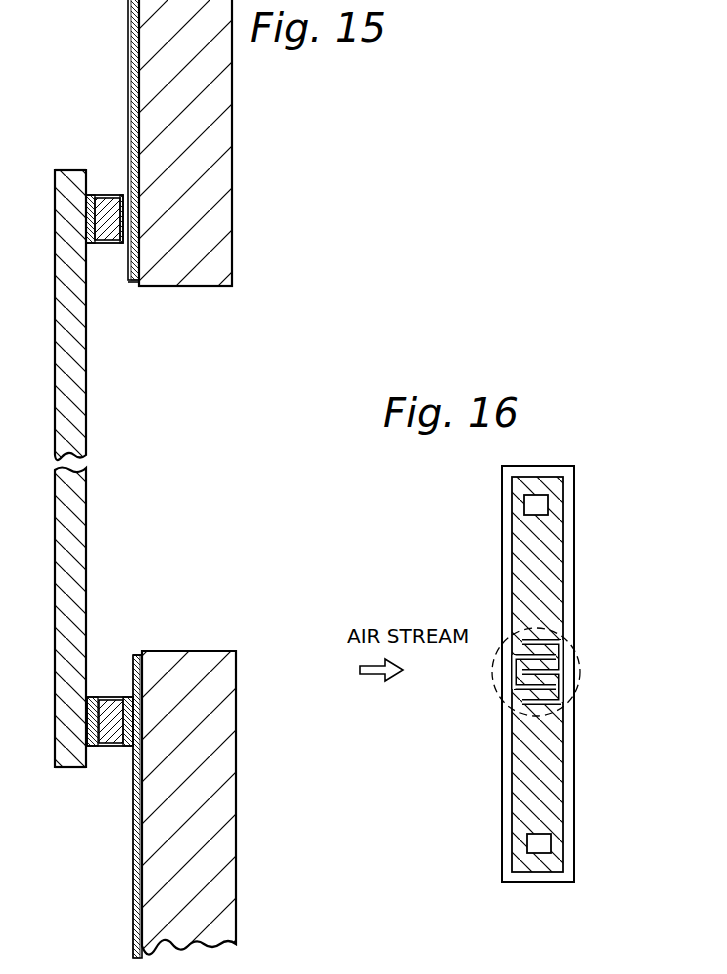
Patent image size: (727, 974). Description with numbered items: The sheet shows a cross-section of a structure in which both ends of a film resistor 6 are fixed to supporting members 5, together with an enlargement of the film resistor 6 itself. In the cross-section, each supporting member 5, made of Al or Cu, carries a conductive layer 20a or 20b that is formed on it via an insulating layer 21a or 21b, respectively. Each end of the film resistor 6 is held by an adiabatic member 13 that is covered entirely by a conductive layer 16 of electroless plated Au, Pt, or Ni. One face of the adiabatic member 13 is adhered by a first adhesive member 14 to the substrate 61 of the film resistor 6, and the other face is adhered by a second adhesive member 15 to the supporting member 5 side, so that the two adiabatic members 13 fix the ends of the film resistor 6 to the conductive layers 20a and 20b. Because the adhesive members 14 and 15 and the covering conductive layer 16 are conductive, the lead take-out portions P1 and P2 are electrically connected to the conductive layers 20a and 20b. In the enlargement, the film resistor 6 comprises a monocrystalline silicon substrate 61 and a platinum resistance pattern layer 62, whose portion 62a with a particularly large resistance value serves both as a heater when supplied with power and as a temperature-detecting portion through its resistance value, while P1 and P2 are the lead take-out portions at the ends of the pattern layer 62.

In FIG. 15, the supporting member 5 is at (210, 280).
In FIG. 15, the film resistor 6 is at (57, 396).
In FIG. 16, the film resistor 6 is at (528, 674).
In FIG. 15, the adiabatic member 13 is at (103, 195).
In FIG. 15, the first adhesive member 14 is at (86, 172).
In FIG. 15, the second adhesive member 15 is at (119, 195).
In FIG. 15, the conductive layer 16 is at (102, 244).
In FIG. 15, the conductive layer 20a is at (133, 899).
In FIG. 15, the conductive layer 20b is at (128, 50).
In FIG. 15, the insulating layer 21a is at (141, 653).
In FIG. 15, the insulating layer 21b is at (138, 284).
In FIG. 16, the monocrystalline silicon substrate 61 is at (575, 782).
In FIG. 16, the platinum resistance pattern layer 62 is at (512, 783).
In FIG. 16, the portion having a particularly large resistance value 62a is at (492, 698).
In FIG. 16, the lead take-out portion P1 is at (551, 842).
In FIG. 16, the lead take-out portion P2 is at (548, 502).